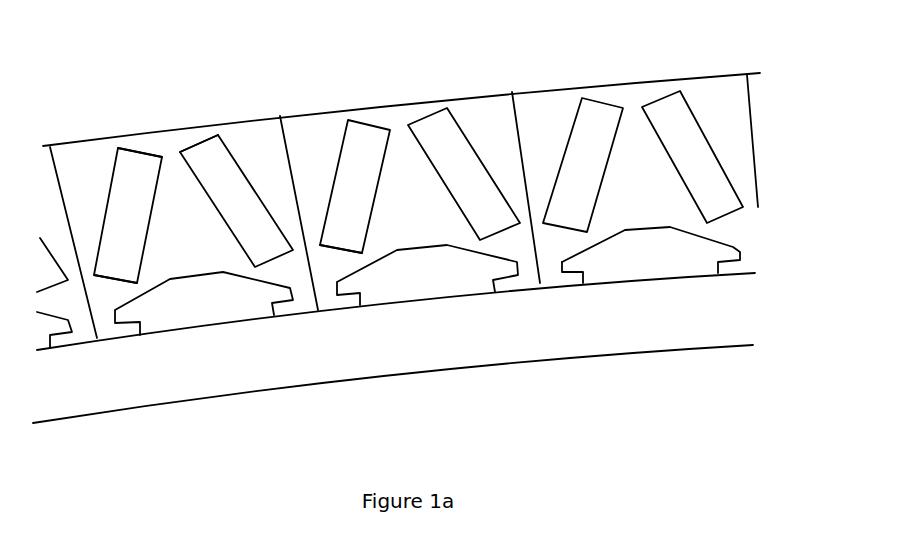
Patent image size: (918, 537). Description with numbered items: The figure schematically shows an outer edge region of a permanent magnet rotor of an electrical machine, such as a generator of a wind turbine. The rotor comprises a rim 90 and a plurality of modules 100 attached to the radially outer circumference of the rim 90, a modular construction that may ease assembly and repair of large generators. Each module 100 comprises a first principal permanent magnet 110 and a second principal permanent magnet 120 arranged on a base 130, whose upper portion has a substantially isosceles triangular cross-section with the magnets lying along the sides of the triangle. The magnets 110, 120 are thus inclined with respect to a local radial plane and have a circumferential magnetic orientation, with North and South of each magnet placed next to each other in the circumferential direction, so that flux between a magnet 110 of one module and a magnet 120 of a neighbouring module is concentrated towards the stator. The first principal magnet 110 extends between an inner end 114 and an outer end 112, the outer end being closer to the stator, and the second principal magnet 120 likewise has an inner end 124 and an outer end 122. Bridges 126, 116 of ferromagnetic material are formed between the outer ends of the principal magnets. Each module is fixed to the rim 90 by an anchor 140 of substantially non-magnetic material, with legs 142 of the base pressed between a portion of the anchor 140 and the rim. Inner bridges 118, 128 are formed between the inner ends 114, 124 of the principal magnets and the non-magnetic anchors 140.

The rim 90 is at (215, 362).
The module 100 is at (493, 130).
The first principal permanent magnet 110 is at (230, 183).
The outer end 112 is at (200, 140).
The inner end 114 is at (305, 310).
The bridge 116 is at (418, 110).
The inner bridge 118 is at (508, 242).
The second principal permanent magnet 120 is at (125, 208).
The outer end 122 is at (140, 153).
The inner end 124 is at (112, 278).
The bridge 126 is at (370, 117).
The inner bridge 128 is at (333, 257).
The base 130 is at (437, 228).
The anchor 140 is at (687, 247).
The legs 142 is at (575, 280).